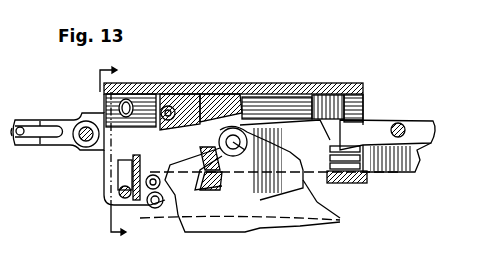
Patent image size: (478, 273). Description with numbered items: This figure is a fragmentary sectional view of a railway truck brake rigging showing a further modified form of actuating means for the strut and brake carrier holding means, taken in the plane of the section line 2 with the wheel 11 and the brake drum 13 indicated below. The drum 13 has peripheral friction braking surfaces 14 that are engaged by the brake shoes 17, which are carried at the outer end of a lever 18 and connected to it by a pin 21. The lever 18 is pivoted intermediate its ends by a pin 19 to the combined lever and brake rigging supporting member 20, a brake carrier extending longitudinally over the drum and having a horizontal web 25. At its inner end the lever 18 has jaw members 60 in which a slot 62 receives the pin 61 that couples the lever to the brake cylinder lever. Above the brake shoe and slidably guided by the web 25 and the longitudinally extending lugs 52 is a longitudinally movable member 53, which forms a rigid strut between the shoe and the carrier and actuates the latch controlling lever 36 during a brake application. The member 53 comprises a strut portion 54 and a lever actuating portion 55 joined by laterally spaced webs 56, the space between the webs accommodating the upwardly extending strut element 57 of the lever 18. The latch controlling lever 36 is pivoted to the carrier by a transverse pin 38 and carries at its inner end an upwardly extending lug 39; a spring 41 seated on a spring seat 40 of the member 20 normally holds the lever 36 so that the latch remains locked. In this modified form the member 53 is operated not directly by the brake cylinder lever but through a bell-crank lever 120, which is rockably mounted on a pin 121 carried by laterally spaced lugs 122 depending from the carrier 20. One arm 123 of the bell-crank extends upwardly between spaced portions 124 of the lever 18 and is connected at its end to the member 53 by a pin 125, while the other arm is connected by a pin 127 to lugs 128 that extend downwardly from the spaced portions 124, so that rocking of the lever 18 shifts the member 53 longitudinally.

The section line 2 is at (332, 210).
The wheel 11 is at (317, 203).
The brake drum 13 is at (237, 212).
The peripheral friction braking surfaces 14 is at (150, 246).
The brake shoes 17 is at (285, 228).
The lever 18 is at (67, 144).
The pin 19 is at (86, 127).
The combined lever and brake rigging supporting member 20 is at (407, 170).
The pin 21 is at (250, 177).
The web 25 is at (278, 84).
The latch controlling lever 36 is at (373, 133).
The pin 38 is at (402, 125).
The lug 39 is at (362, 116).
The spring seat 40 is at (340, 192).
The spring 41 is at (377, 172).
The lugs 52 is at (318, 120).
The longitudinally movable member 53 is at (184, 96).
The strut portion 54 is at (226, 96).
The lever actuating portion 55 is at (327, 96).
The webs 56 is at (292, 102).
The strut element 57 is at (262, 98).
The jaw members 60 is at (26, 122).
The pin 61 is at (19, 136).
The slot 62 is at (44, 126).
The bell-crank lever 120 is at (110, 193).
The pin 121 is at (118, 200).
The lugs 122 is at (100, 168).
The arm 123 is at (113, 180).
The spaced portions 124 is at (126, 133).
The pin 125 is at (169, 106).
The pin 127 is at (170, 230).
The lugs 128 is at (177, 198).